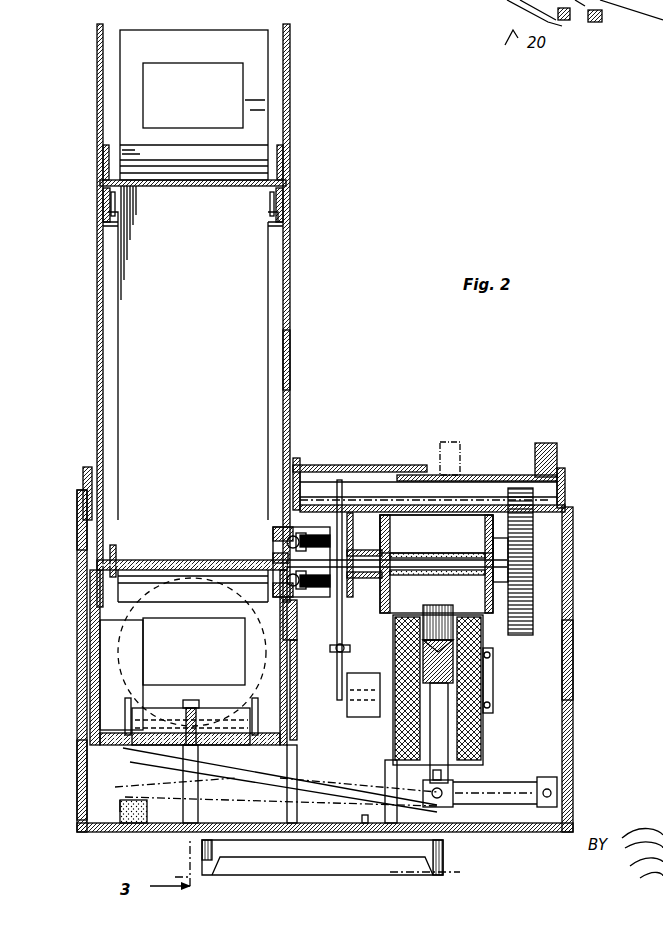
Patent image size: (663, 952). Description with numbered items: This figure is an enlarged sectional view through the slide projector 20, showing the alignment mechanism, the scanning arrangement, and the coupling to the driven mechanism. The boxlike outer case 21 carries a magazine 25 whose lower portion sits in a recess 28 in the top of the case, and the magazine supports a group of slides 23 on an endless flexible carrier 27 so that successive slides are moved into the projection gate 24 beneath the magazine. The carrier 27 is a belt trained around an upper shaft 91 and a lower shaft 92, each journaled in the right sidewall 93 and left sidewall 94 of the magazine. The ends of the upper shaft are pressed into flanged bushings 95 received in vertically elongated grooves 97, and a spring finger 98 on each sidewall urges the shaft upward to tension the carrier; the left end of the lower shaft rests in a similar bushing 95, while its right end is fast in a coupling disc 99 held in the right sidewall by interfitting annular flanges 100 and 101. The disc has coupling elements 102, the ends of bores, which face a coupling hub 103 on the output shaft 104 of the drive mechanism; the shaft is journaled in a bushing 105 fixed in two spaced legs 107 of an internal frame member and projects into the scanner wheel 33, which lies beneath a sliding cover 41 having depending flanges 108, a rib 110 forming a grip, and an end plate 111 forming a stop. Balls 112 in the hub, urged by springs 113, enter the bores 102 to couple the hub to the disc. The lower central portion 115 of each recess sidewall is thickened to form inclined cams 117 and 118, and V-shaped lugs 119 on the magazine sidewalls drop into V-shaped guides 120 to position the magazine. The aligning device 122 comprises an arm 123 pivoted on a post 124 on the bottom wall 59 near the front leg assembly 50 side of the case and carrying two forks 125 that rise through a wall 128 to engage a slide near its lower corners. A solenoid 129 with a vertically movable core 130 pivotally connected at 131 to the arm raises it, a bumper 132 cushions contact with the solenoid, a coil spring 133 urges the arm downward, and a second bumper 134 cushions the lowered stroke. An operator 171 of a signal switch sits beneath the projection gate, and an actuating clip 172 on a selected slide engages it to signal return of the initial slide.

The slide projector 20 is at (582, 547).
The outer case 21 is at (575, 655).
The slides 23 is at (178, 30).
The projection gate 24 is at (118, 683).
The magazine 25 is at (292, 372).
The endless flexible carrier 27 is at (270, 290).
The recess 28 is at (92, 475).
The scanner wheel 33 is at (533, 612).
The sliding cover 41 is at (470, 475).
The front leg assembly 50 is at (375, 860).
The bottom wall 59 is at (135, 825).
The upper shaft 91 is at (190, 186).
The lower shaft 92 is at (160, 560).
The right sidewall 93 is at (290, 310).
The left sidewall 94 is at (97, 280).
The flanged bushings 95 is at (103, 170).
The vertically elongated grooves 97 is at (105, 205).
The spring finger 98 is at (113, 210).
The coupling disc 99 is at (280, 548).
The annular flange 100 is at (288, 535).
The annular flange 101 is at (292, 540).
The coupling elements 102 is at (275, 565).
The coupling hub 103 is at (352, 520).
The output shaft 104 is at (425, 568).
The bushing 105 is at (395, 565).
The legs 107 is at (480, 525).
The depending flanges 108 is at (565, 477).
The rib 110 is at (557, 445).
The end plate 111 is at (550, 487).
The balls 112 is at (340, 515).
The springs 113 is at (330, 545).
The thickened portion 115 is at (90, 600).
The cam 117 is at (80, 525).
The cam 118 is at (280, 608).
The V-shaped lugs 119 is at (95, 632).
The V-shaped guides 120 is at (120, 637).
The aligning device 122 is at (110, 767).
The arm 123 is at (340, 770).
The post 124 is at (560, 793).
The forks 125 is at (132, 700).
The wall 128 is at (280, 757).
The solenoid 129 is at (492, 700).
The core 130 is at (490, 727).
The pivotal connection 131 is at (452, 800).
The bumper 132 is at (365, 820).
The coil spring 133 is at (455, 778).
The second bumper 134 is at (120, 812).
The operator 171 is at (162, 719).
The actuating clip 172 is at (200, 712).